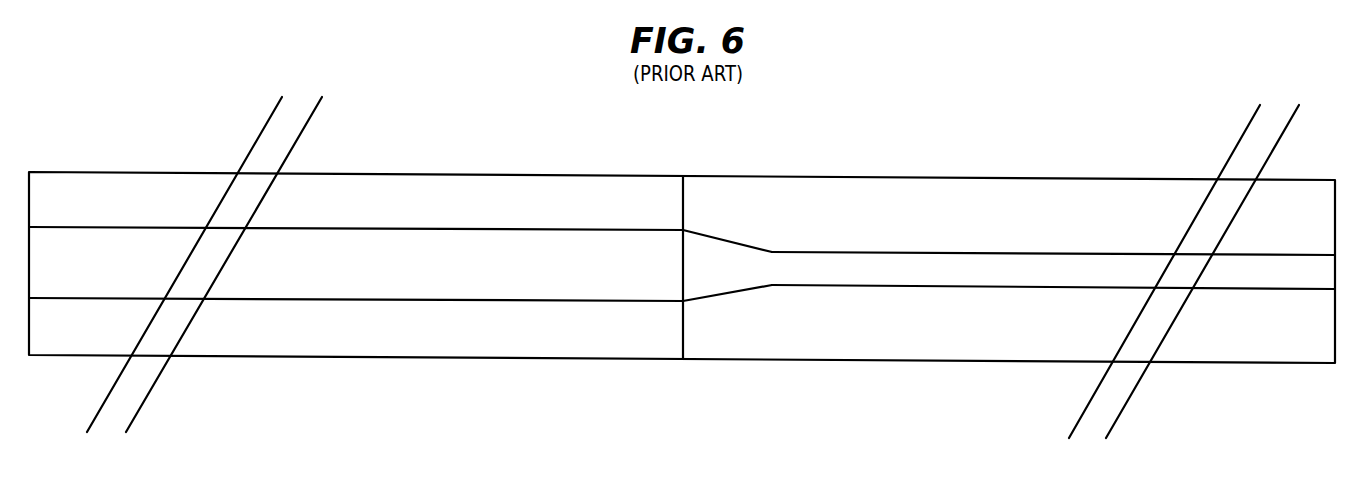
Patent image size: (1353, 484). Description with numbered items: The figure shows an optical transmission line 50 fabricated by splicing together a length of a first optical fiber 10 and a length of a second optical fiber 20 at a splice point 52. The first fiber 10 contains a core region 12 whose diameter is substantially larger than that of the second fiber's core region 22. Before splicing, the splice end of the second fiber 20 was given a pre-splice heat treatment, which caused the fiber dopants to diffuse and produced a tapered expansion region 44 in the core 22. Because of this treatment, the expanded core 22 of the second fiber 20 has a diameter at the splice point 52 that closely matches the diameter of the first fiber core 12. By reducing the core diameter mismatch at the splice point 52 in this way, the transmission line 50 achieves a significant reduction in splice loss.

The first optical fiber 10 is at (495, 173).
The core region of first fiber 12 is at (509, 282).
The second optical fiber 20 is at (1052, 177).
The core region of second fiber 22 is at (878, 282).
The tapered expansion region 44 is at (722, 250).
The optical transmission line 50 is at (937, 82).
The splice point 52 is at (685, 198).